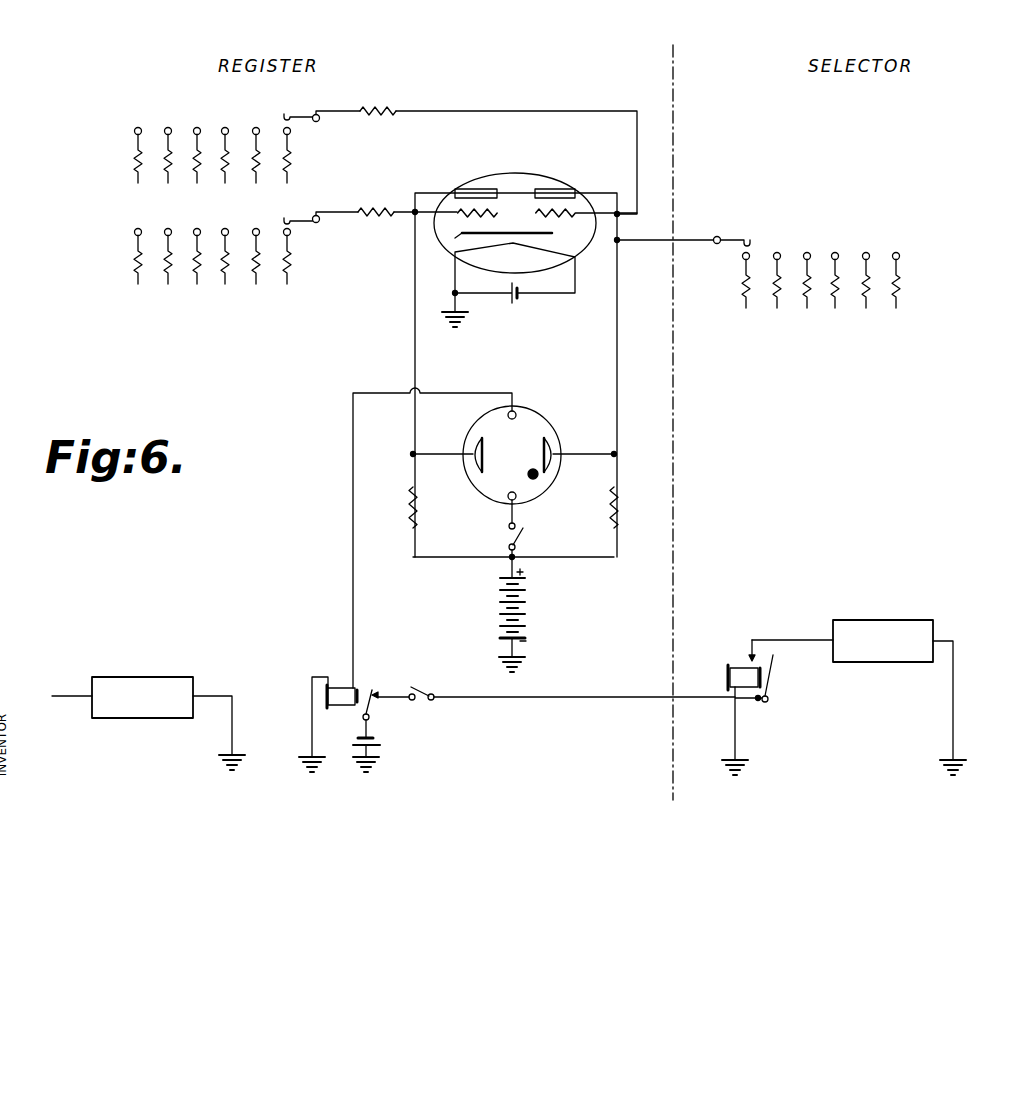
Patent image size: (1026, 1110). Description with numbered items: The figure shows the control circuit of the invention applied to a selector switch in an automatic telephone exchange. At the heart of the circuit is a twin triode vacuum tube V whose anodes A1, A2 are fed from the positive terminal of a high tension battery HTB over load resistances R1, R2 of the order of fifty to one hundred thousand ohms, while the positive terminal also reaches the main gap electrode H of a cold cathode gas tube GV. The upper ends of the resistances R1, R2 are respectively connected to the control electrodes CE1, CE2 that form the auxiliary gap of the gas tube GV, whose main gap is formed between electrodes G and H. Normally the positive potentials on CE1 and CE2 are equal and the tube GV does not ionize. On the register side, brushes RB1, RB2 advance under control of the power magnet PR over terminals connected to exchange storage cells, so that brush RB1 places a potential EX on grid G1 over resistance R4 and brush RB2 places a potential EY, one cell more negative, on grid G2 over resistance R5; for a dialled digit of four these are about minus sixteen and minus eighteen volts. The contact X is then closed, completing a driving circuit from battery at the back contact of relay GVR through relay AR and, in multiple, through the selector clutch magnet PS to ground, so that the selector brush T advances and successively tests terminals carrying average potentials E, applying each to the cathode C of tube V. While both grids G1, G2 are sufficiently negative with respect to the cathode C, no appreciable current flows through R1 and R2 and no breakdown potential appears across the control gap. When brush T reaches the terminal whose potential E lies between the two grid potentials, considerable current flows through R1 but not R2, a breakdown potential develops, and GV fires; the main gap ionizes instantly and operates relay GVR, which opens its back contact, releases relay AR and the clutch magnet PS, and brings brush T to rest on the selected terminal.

The register potential EY is at (153, 152).
The register potential EX is at (152, 266).
The register brush RB2 is at (300, 116).
The register brush RB1 is at (300, 222).
The resistance R5 is at (498, 148).
The resistance R4 is at (407, 228).
The twin triode vacuum tube V is at (525, 352).
The anode A1 is at (477, 189).
The anode A2 is at (562, 189).
The control grid G1 is at (463, 216).
The control grid G2 is at (574, 218).
The cathode C is at (546, 235).
The selector brush T is at (730, 237).
The selector terminal potential E is at (870, 278).
The cold cathode gas tube GV is at (485, 526).
The main gap electrode G is at (519, 424).
The control electrode CE1 is at (472, 477).
The control electrode CE2 is at (548, 463).
The main gap electrode H is at (520, 500).
The contact X is at (474, 624).
The load resistance R1 is at (399, 507).
The load resistance R2 is at (626, 507).
The high tension battery HTB is at (537, 614).
The power magnet PR is at (148, 723).
The relay GVR is at (340, 688).
The relay AR is at (742, 667).
The selector clutch magnet PS is at (859, 697).